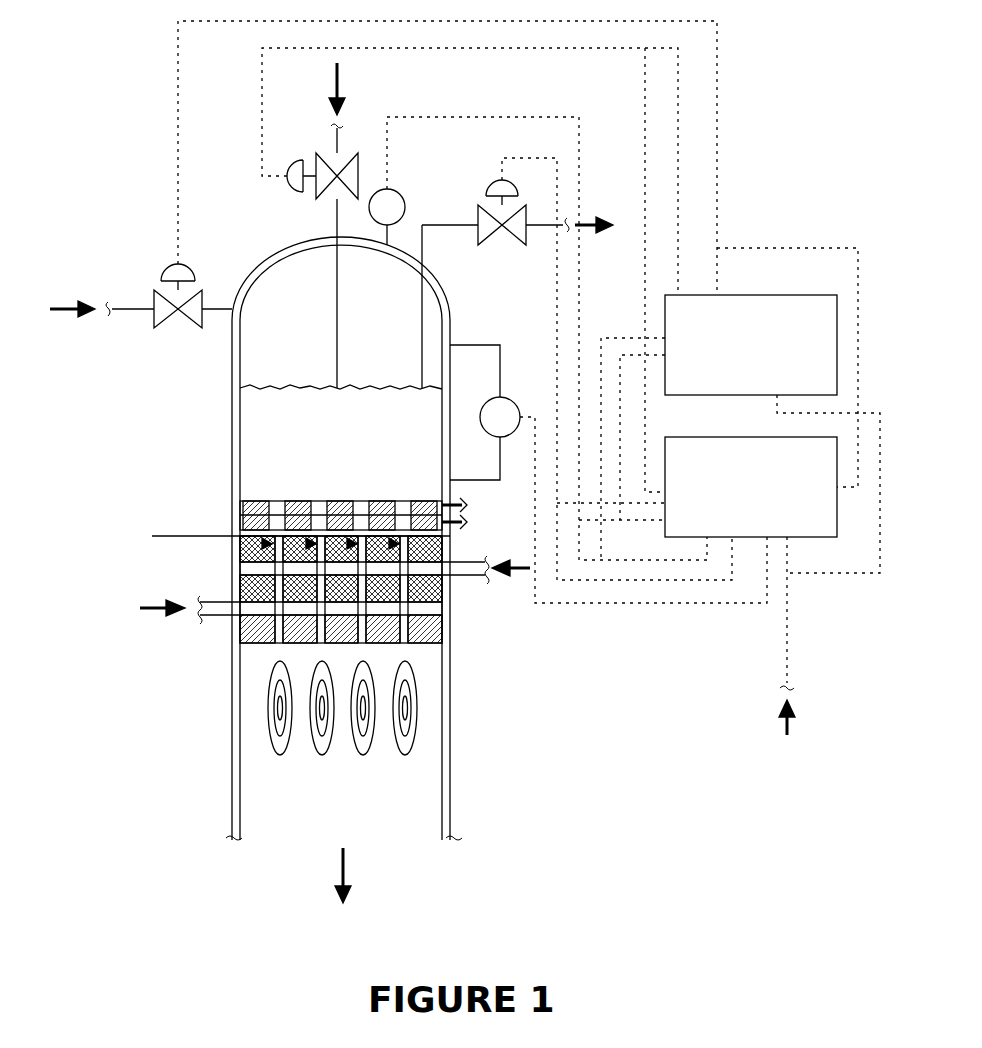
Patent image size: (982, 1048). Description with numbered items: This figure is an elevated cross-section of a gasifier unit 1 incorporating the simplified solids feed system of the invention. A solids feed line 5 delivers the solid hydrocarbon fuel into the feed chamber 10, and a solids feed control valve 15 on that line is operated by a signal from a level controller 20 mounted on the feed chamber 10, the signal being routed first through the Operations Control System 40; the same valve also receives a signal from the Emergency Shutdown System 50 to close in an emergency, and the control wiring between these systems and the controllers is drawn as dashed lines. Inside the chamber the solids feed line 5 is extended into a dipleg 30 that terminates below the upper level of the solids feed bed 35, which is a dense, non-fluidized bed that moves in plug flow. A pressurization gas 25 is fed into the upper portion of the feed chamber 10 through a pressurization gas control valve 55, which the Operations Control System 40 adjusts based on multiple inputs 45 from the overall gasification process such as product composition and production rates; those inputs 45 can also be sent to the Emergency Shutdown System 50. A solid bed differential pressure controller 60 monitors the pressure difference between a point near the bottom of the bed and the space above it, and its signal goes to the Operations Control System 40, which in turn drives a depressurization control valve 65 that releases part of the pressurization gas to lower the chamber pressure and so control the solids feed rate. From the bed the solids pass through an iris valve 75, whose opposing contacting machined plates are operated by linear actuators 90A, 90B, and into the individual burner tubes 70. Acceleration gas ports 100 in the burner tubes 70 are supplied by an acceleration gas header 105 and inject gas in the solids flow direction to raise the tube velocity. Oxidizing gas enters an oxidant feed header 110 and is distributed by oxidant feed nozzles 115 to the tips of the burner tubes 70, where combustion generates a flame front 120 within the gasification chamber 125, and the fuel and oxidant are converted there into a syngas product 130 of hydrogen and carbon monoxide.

The gasifier unit 1 is at (193, 660).
The solids feed line 5 is at (332, 217).
The feed chamber 10 is at (344, 538).
The solids feed control valve 15 is at (287, 183).
The level controller 20 is at (396, 192).
The pressurization gas 25 is at (125, 315).
The dipleg 30 is at (337, 303).
The solids feed bed 35 is at (262, 463).
The Operations Control System 40 is at (690, 437).
The multiple inputs 45 is at (785, 649).
The Emergency Shutdown System 50 is at (742, 295).
The pressurization gas control valve 55 is at (160, 262).
The solid bed differential pressure controller 60 is at (510, 398).
The depressurization control valve 65 is at (492, 174).
The burner tubes 70 is at (289, 537).
The iris valve 75 is at (228, 503).
The linear actuator 90A is at (470, 498).
The linear actuator 90B is at (470, 529).
The acceleration gas ports 100 is at (440, 606).
The acceleration gas header 105 is at (478, 579).
The oxidant feed header 110 is at (218, 598).
The oxidant feed nozzles 115 is at (425, 635).
The flame front 120 is at (262, 707).
The gasification chamber 125 is at (280, 788).
The syngas product 130 is at (350, 868).